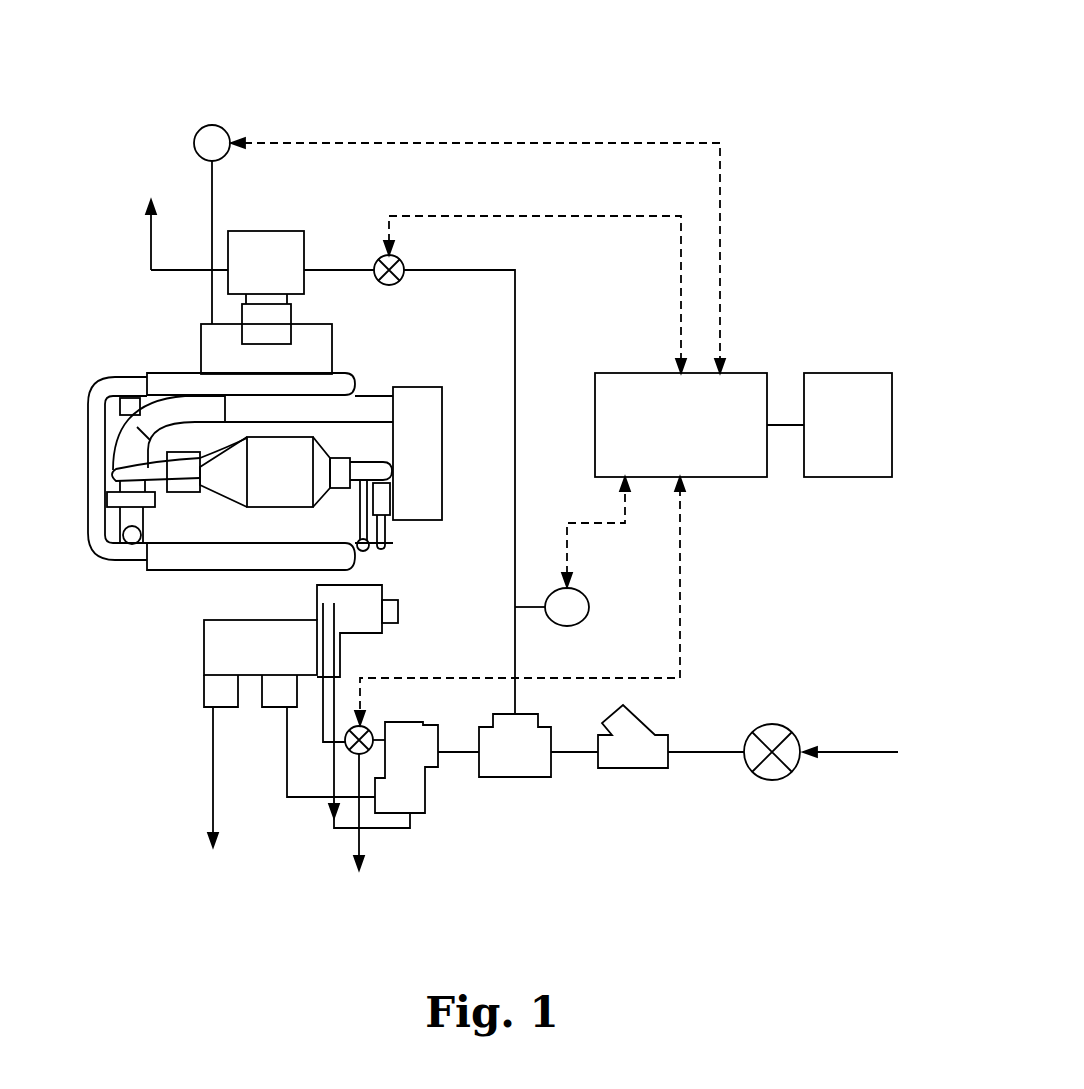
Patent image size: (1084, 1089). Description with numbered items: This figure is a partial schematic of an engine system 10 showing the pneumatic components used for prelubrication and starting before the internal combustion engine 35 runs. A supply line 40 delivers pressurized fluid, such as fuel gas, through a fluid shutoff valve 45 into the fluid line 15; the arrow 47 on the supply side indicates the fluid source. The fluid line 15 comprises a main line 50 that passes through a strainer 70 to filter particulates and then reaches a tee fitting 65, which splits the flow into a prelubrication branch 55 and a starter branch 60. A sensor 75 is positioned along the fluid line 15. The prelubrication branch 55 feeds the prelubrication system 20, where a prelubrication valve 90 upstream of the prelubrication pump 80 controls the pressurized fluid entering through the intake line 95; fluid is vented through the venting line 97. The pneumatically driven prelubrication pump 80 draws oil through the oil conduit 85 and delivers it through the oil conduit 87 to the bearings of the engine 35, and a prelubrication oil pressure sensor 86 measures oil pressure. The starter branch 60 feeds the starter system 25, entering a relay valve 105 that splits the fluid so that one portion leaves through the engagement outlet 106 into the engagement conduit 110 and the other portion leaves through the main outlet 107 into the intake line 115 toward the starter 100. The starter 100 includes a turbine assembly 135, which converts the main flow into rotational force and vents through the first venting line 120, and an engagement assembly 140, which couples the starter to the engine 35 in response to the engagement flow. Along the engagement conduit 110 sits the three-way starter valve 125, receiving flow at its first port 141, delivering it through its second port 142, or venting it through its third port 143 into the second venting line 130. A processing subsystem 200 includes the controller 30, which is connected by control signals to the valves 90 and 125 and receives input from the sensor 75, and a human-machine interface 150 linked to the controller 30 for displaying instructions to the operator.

The engine system 10 is at (212, 85).
The fluid line 15 is at (731, 735).
The prelubrication system 20 is at (333, 186).
The starter system 25 is at (165, 664).
The controller 30 is at (757, 373).
The internal combustion engine 35 is at (100, 378).
The supply line 40 is at (862, 752).
The fluid shutoff valve 45 is at (781, 725).
The fuel source direction 47 is at (666, 860).
The main line 50 is at (700, 752).
The prelubrication branch 55 is at (515, 432).
The starter branch 60 is at (458, 752).
The tee fitting 65 is at (528, 777).
The strainer 70 is at (645, 727).
The sensor 75 is at (580, 600).
The prelubrication pump 80 is at (252, 231).
The oil conduit 85 is at (332, 352).
The prelubrication oil pressure sensor 86 is at (195, 136).
The oil conduit 87 is at (201, 336).
The prelubrication valve 90 is at (392, 285).
The intake line 95 is at (345, 268).
The venting line 97 is at (148, 210).
The starter 100 is at (293, 608).
The relay valve 105 is at (421, 830).
The engagement outlet 106 is at (409, 818).
The main outlet 107 is at (374, 800).
The engagement conduit 110 is at (323, 698).
The intake line 115 is at (287, 780).
The first venting line 120 is at (213, 790).
The starter valve 125 is at (365, 679).
The second venting line 130 is at (355, 845).
The turbine assembly 135 is at (227, 618).
The engagement assembly 140 is at (383, 587).
The first port 141 is at (372, 728).
The second port 142 is at (340, 742).
The third port 143 is at (362, 752).
The human-machine interface 150 is at (840, 373).
The processing subsystem 200 is at (757, 315).